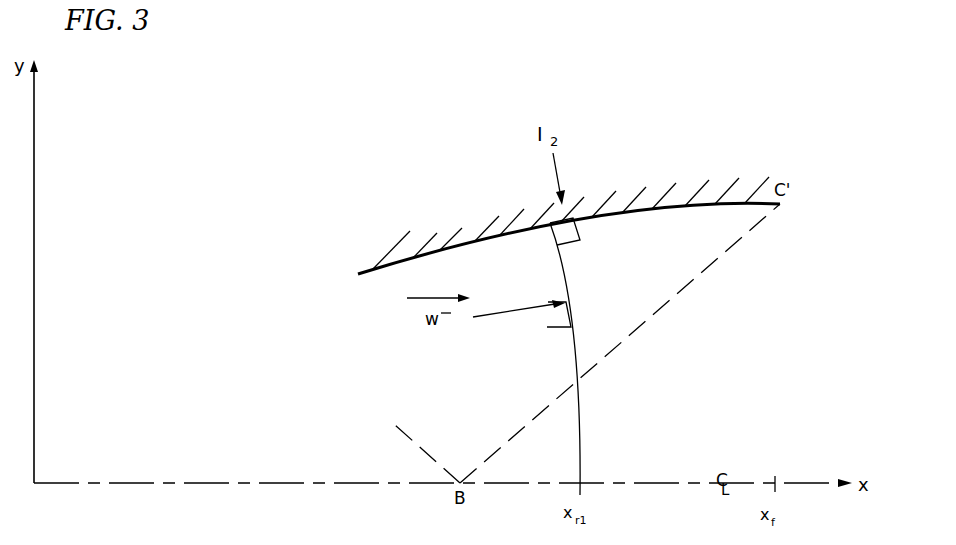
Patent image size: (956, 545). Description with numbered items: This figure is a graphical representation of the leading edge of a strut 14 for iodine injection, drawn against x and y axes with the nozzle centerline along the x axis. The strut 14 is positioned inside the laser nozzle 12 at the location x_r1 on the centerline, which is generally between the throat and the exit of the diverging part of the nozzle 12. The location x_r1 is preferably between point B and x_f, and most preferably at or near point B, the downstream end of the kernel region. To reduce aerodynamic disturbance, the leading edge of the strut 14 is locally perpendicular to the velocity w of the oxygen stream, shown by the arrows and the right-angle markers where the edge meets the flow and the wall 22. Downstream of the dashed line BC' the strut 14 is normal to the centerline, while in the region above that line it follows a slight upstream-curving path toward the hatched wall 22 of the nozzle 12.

The laser nozzle 12 is at (321, 245).
The surface hatching / wall 22 is at (667, 207).
The strut 14 is at (581, 441).